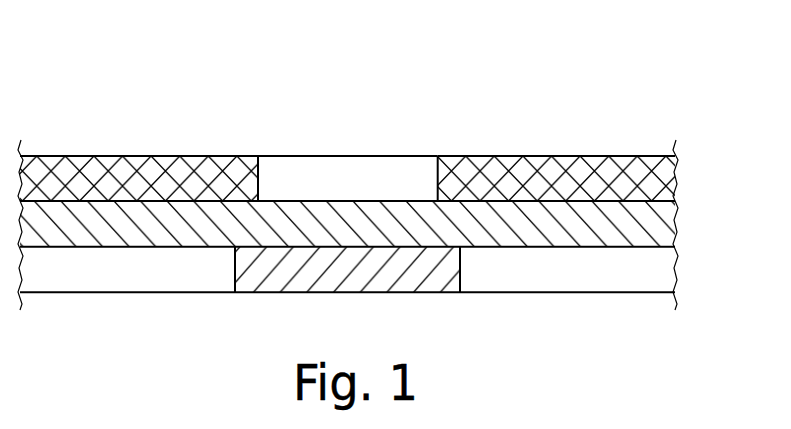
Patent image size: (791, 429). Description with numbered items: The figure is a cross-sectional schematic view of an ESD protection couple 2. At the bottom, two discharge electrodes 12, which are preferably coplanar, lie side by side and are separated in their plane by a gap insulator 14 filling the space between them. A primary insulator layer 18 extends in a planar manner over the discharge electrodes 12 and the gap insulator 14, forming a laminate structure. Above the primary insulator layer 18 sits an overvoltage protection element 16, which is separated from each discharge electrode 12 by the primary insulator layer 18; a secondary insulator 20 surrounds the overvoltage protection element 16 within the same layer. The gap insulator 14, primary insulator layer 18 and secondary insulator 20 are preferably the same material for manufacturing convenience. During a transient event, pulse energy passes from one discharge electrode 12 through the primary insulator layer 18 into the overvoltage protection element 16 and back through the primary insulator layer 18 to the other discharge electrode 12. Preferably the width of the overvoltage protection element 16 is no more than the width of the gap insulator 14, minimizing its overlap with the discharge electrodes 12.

The ESD protection couple 2 is at (492, 131).
The discharge electrodes 12 is at (127, 268).
The gap insulator 14 is at (280, 278).
The overvoltage protection element 16 is at (387, 175).
The primary insulator layer 18 is at (633, 232).
The secondary insulator 20 is at (133, 183).